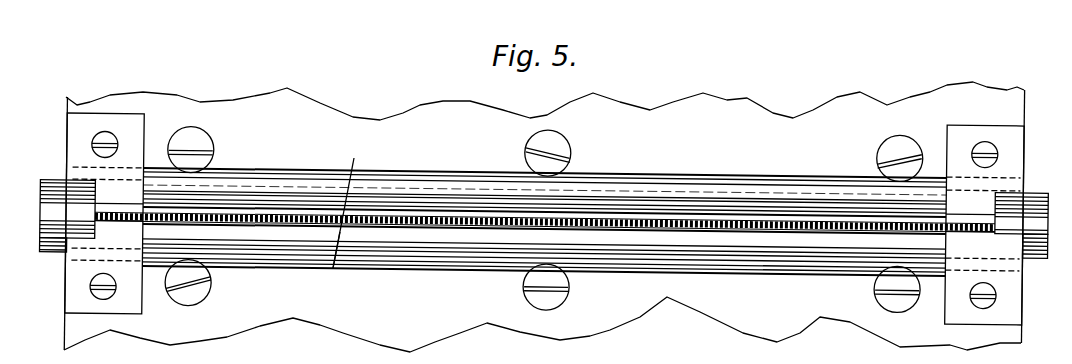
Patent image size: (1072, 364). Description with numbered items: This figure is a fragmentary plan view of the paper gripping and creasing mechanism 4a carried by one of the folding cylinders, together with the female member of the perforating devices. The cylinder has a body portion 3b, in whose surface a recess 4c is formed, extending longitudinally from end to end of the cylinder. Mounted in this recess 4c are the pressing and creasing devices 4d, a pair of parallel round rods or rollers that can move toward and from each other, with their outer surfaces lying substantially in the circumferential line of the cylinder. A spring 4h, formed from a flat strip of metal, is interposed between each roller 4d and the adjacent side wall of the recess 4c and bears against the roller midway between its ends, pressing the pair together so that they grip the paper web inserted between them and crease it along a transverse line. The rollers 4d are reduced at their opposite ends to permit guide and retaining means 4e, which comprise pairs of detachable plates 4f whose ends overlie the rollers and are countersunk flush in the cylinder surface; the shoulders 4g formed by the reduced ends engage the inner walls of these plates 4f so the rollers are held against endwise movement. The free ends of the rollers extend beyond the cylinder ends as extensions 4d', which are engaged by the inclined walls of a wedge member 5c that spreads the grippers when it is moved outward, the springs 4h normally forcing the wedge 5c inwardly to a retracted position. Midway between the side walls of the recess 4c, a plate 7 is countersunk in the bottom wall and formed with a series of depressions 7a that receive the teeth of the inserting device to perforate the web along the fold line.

The body portion 3b is at (418, 113).
The gripping and creasing mechanism 4a is at (747, 227).
The recess 4c is at (663, 172).
The pressing and creasing devices 4d is at (545, 228).
The roller extensions 4d' is at (530, 224).
The guide and retaining means 4e is at (72, 153).
The detachable plates 4f is at (66, 288).
The shoulders 4g is at (147, 178).
The spring 4h is at (438, 177).
The wedge member 5c is at (42, 212).
The plate 7 is at (331, 265).
The depressions 7a is at (350, 204).